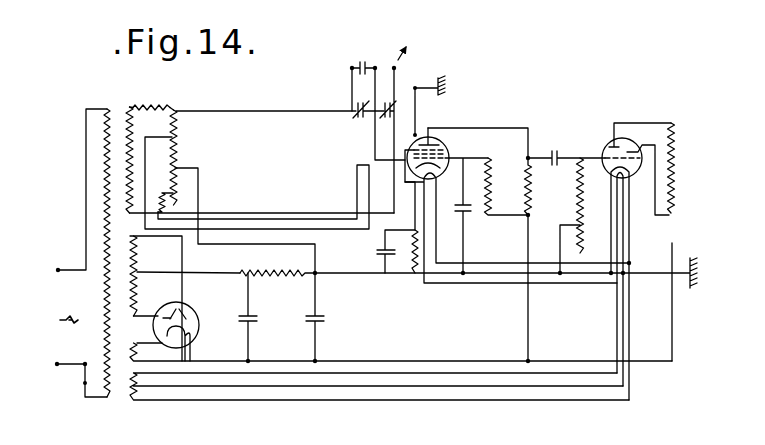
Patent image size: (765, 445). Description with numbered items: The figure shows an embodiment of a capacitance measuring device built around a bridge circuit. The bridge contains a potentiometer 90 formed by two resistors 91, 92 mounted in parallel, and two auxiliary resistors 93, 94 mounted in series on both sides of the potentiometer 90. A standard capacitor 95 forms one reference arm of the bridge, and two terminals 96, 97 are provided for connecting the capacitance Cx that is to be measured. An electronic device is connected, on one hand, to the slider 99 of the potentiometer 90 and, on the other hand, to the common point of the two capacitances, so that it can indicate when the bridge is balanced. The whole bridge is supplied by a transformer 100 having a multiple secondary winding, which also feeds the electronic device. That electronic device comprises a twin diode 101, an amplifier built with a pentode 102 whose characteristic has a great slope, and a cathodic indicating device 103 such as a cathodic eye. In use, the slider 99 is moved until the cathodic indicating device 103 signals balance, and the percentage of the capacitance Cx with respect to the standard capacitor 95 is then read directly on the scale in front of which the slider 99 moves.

The potentiometer 90 is at (153, 165).
The resistor 91 is at (178, 148).
The resistor 92 is at (156, 201).
The auxiliary resistor 93 is at (178, 118).
The auxiliary resistor 94 is at (178, 204).
The standard capacitor 95 is at (351, 67).
The terminal 96 is at (376, 67).
The terminal 97 is at (395, 68).
The slider 99 is at (178, 167).
The transformer 100 is at (118, 264).
The twin diode 101 is at (155, 333).
The pentode 102 is at (440, 143).
The cathodic indicating device 103 is at (623, 140).